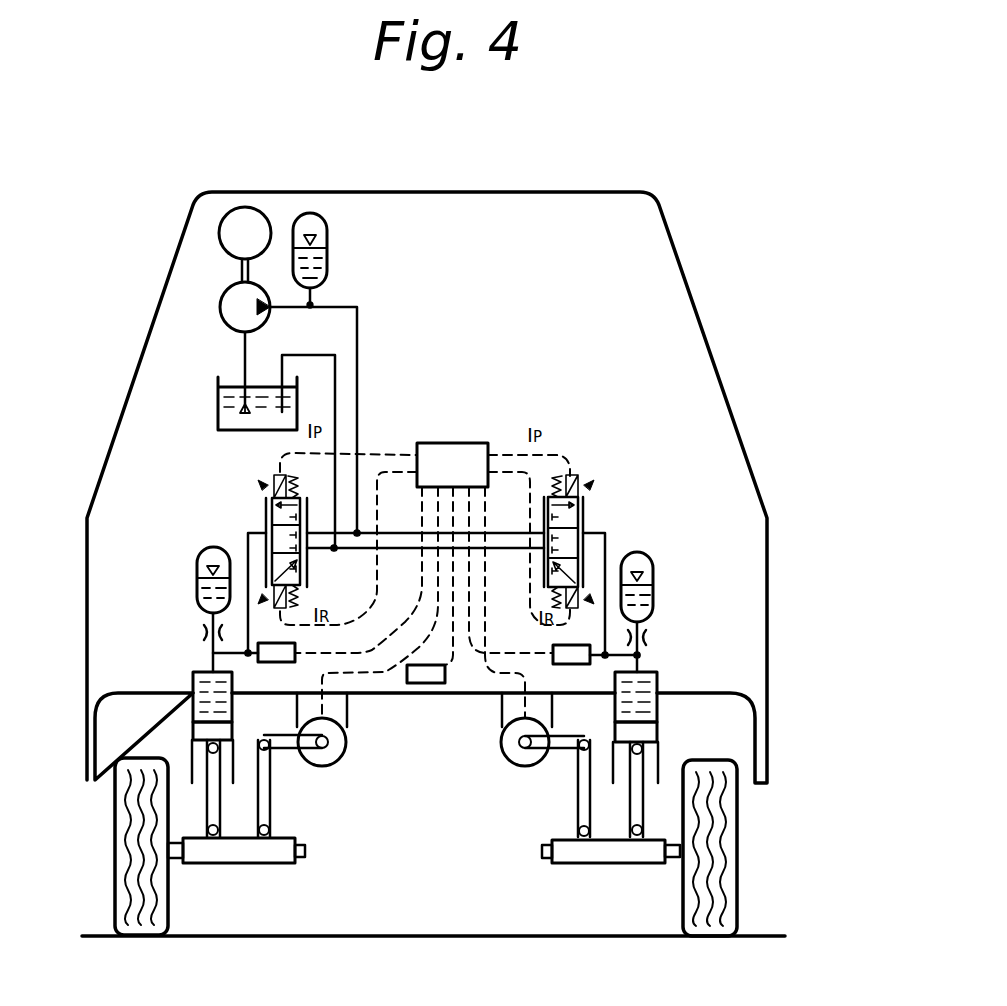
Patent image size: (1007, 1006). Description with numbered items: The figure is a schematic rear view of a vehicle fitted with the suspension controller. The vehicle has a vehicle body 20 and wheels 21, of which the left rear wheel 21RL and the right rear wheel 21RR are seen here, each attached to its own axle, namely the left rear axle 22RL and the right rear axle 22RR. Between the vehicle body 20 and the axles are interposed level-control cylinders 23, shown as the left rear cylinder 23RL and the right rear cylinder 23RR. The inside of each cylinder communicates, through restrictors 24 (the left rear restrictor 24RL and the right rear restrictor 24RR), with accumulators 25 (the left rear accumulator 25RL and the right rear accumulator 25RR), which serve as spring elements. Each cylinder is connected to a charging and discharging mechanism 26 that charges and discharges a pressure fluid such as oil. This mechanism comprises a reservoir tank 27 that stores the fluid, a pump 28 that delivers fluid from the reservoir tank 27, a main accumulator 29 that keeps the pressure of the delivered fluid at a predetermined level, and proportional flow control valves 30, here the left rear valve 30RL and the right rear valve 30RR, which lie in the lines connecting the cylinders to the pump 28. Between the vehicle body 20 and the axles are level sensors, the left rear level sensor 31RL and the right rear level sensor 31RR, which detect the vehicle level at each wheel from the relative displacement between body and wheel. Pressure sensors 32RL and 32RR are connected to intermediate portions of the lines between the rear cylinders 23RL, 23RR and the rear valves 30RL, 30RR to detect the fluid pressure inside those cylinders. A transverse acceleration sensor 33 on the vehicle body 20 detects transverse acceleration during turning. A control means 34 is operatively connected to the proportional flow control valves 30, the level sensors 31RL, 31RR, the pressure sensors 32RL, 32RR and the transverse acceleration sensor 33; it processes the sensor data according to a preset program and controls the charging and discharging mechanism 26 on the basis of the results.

The vehicle body 20 is at (695, 296).
The wheels 21 is at (741, 875).
The left rear wheel 21RL is at (155, 927).
The right rear wheel 21RR is at (693, 933).
The left rear axle 22RL is at (203, 853).
The right rear axle 22RR is at (558, 862).
The level-control cylinders 23 is at (740, 717).
The left rear level-control cylinder 23RL is at (192, 728).
The right rear level-control cylinder 23RR is at (655, 712).
The restrictors 24 is at (840, 633).
The left rear restrictor 24RL is at (203, 633).
The right rear restrictor 24RR is at (768, 624).
The accumulators 25 is at (840, 523).
The left rear accumulator 25RL is at (193, 563).
The right rear accumulator 25RR is at (768, 490).
The charging and discharging mechanism 26 is at (350, 291).
The reservoir tank 27 is at (217, 407).
The pump 28 is at (220, 317).
The main accumulator 29 is at (325, 236).
The proportional flow control valves 30 is at (700, 410).
The left rear proportional flow control valve 30RL is at (267, 502).
The right rear proportional flow control valve 30RR is at (588, 498).
The left rear level sensor 31RL is at (340, 753).
The right rear level sensor 31RR is at (503, 753).
The left rear pressure sensor 32RL is at (258, 656).
The right rear pressure sensor 32RR is at (583, 664).
The transverse acceleration sensor 33 is at (430, 683).
The control means 34 is at (458, 458).